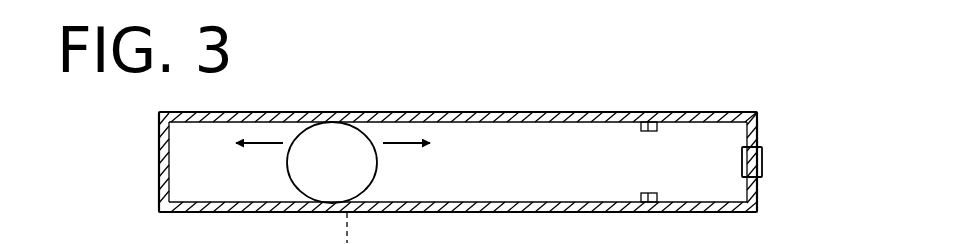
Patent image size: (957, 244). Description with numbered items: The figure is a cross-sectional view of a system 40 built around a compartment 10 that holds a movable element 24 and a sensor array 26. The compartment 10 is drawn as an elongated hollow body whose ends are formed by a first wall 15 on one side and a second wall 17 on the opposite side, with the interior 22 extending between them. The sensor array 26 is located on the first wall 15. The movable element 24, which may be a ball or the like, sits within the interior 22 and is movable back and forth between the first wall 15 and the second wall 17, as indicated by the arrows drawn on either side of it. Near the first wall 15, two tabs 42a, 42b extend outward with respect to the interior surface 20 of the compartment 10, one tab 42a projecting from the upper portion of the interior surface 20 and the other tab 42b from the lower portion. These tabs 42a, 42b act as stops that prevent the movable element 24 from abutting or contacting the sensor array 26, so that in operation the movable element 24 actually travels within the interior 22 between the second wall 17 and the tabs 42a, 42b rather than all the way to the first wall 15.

The compartment 10 is at (463, 150).
The first wall 15 is at (761, 127).
The second wall 17 is at (156, 163).
The interior surface 20 is at (580, 126).
The interior 22 is at (527, 135).
The movable element 24 is at (327, 140).
The sensor array 26 is at (758, 162).
The system 40 is at (126, 127).
The tab 42a is at (648, 123).
The tab 42b is at (647, 203).